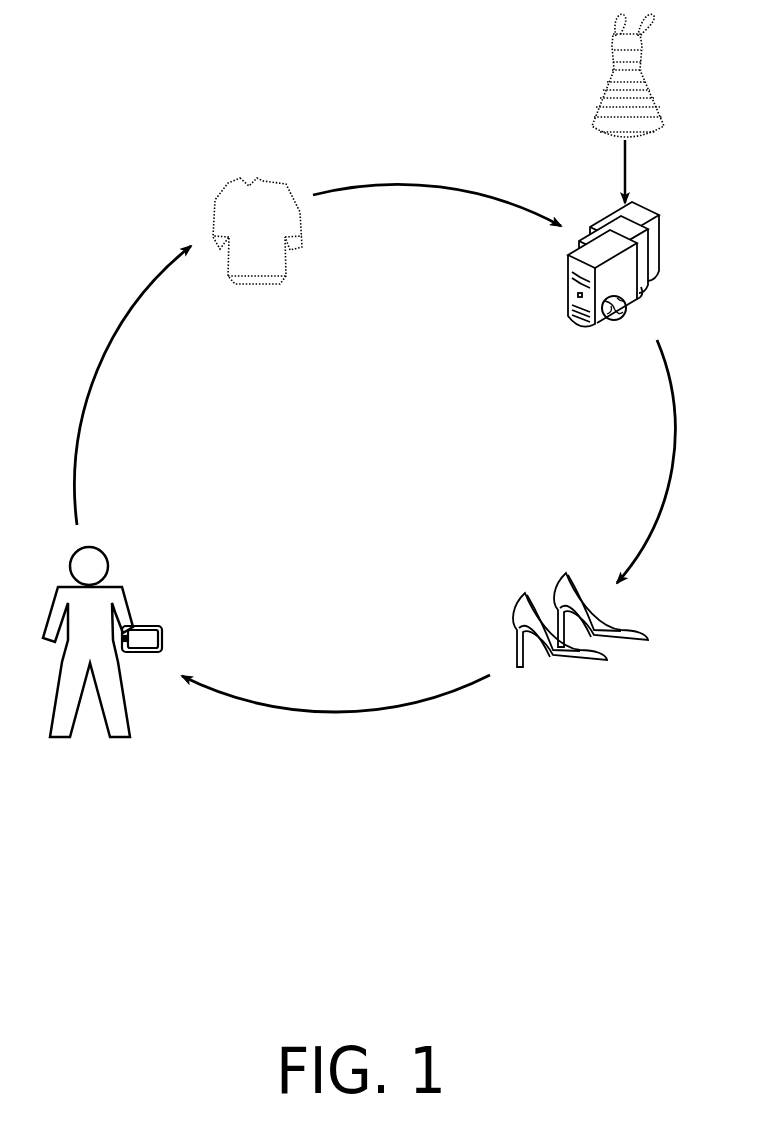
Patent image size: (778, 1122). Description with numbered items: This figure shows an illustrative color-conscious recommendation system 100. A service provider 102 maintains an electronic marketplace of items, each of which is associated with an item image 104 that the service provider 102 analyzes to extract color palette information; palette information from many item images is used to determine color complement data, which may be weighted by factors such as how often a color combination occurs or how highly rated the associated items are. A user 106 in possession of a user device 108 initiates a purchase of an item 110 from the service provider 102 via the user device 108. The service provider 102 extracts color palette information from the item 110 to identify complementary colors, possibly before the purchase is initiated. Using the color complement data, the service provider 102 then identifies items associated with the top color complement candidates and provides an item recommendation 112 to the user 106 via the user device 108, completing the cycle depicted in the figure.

The color-conscious recommendation system 100 is at (150, 108).
The service provider 102 is at (662, 242).
The item image 104 is at (608, 82).
The user 106 is at (110, 565).
The user device 108 is at (163, 635).
The item 110 is at (250, 172).
The item recommendation 112 is at (566, 572).